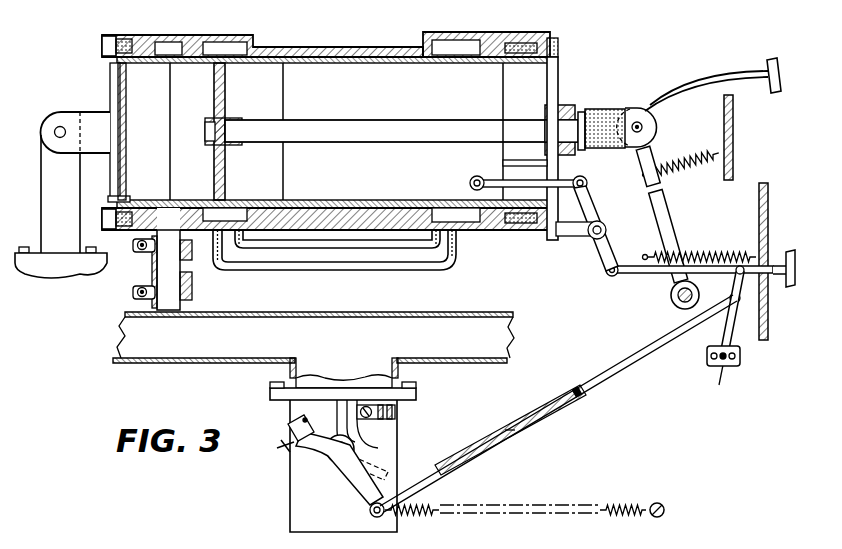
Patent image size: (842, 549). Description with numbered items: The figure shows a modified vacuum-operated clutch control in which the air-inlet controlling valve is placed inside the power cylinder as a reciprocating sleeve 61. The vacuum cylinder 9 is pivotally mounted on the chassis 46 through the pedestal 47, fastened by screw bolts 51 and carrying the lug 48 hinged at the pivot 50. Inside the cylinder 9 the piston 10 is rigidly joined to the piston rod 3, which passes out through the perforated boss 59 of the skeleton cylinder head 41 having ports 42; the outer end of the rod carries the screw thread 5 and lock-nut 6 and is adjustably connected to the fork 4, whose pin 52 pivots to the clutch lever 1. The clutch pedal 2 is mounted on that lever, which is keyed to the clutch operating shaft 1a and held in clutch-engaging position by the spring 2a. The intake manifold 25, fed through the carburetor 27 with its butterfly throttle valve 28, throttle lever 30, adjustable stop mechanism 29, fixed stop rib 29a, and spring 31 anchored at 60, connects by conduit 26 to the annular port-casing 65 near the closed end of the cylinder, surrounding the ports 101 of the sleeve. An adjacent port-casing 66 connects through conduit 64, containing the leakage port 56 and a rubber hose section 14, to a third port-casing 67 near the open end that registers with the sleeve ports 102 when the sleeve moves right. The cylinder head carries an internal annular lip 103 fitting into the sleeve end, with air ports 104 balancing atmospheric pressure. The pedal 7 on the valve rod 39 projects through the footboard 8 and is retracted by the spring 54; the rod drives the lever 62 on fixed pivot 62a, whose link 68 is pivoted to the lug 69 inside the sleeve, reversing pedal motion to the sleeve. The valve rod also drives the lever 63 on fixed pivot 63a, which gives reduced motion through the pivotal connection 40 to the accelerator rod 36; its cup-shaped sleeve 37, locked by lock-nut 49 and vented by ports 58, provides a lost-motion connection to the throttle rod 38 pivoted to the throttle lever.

The clutch lever 1 is at (670, 210).
The clutch operating shaft 1a is at (674, 303).
The clutch pedal 2 is at (775, 60).
The spring 2a is at (665, 172).
The piston rod 3 is at (348, 120).
The fork 4 is at (614, 148).
The screw thread 5 is at (610, 109).
The lock-nut 6 is at (584, 112).
The pedal 7 is at (789, 252).
The footboard 8 is at (733, 120).
The vacuum cylinder 9 is at (253, 36).
The piston 10 is at (225, 172).
The rubber hose section 14 is at (180, 272).
The intake manifold 25 is at (268, 312).
The conduit 26 is at (133, 294).
The carburetor 27 is at (288, 515).
The throttle valve 28 is at (388, 460).
The adjustable stop mechanism 29 is at (395, 412).
The fixed stop rib 29a is at (345, 388).
The throttle lever 30 is at (355, 488).
The spring 31 is at (612, 514).
The accelerator rod 36 is at (634, 358).
The cup-shaped sleeve 37 is at (488, 452).
The throttle rod 38 is at (425, 498).
The valve rod 39 is at (646, 275).
The pivotal connection 40 is at (730, 296).
The skeleton cylinder head 41 is at (560, 52).
The ports 42 is at (558, 82).
The chassis 46 is at (48, 270).
The pedestal 47 is at (38, 175).
The lug 48 is at (85, 112).
The lock-nut 49 is at (574, 388).
The pivot 50 is at (58, 128).
The screw bolts 51 is at (30, 247).
The pin 52 is at (643, 126).
The spring 54 is at (700, 254).
The leakage port 56 is at (392, 270).
The ports 58 is at (510, 430).
The perforated boss 59 is at (545, 110).
The anchor 60 is at (662, 504).
The sleeve 61 is at (205, 63).
The lever 62 is at (603, 270).
The fixed pivot 62a is at (590, 240).
The lever 63 is at (722, 337).
The fixed pivot 63a is at (725, 366).
The conduit 64 is at (322, 262).
The annular port-casing 65 is at (168, 42).
The annular port-casing 66 is at (227, 42).
The annular port-casing 67 is at (460, 40).
The link 68 is at (518, 183).
The lug 69 is at (470, 181).
The ports 101 is at (188, 63).
The ports 102 is at (412, 63).
The internal annular lip 103 is at (150, 63).
The air ports 104 is at (110, 63).